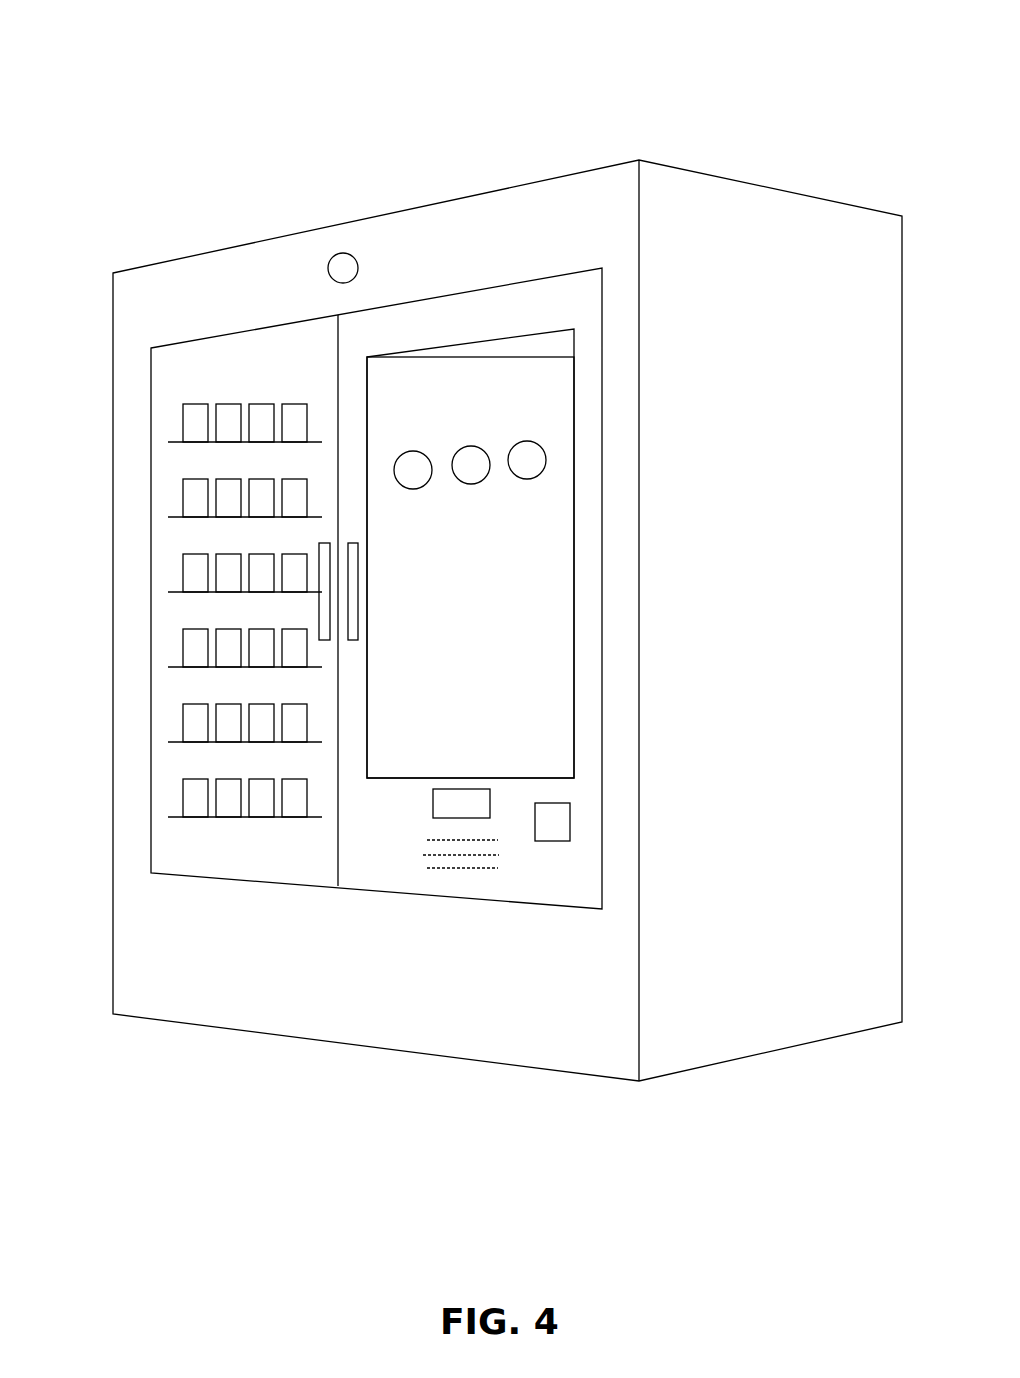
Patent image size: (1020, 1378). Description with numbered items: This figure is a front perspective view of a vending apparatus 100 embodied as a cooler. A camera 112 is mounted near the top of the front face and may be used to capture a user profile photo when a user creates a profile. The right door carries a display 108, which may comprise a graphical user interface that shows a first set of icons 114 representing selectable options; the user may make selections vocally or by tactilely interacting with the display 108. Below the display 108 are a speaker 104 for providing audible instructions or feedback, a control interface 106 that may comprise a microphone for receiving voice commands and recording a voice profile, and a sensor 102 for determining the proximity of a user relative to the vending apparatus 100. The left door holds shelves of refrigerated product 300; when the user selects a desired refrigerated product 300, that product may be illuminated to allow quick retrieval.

The vending apparatus 100 is at (755, 64).
The sensor 102 is at (557, 820).
The speaker 104 is at (447, 803).
The control interface 106 is at (475, 863).
The display 108 is at (555, 592).
The camera 112 is at (342, 265).
The first set of icons 114 is at (471, 465).
The refrigerated product 300 is at (198, 423).